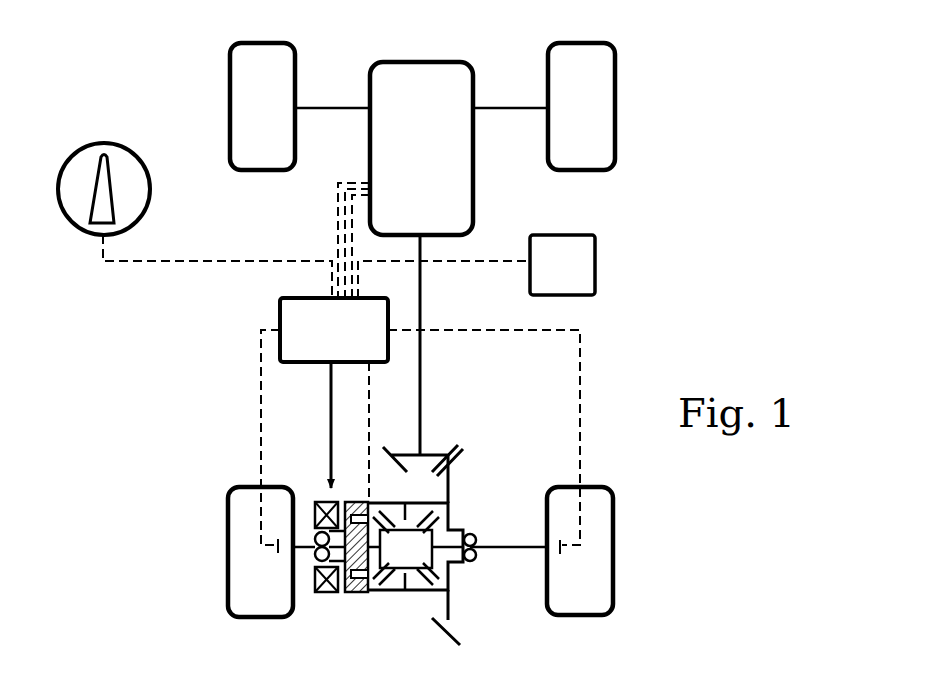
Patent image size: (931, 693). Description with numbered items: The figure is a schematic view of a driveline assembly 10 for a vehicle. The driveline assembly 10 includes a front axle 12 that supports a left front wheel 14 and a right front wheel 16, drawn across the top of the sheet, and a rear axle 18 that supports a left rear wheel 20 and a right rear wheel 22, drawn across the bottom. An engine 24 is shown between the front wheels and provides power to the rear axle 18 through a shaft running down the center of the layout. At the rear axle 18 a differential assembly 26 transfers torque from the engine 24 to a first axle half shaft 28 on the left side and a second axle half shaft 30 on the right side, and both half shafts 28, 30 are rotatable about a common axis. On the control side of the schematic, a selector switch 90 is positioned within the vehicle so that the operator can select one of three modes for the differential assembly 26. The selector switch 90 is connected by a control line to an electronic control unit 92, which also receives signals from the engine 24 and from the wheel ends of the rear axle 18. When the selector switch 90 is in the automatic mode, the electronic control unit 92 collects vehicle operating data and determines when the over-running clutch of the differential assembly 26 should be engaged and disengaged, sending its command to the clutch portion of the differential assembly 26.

The driveline assembly 10 is at (178, 418).
The front axle 12 is at (507, 108).
The left front wheel 14 is at (232, 46).
The right front wheel 16 is at (617, 70).
The rear axle 18 is at (504, 556).
The left rear wheel 20 is at (227, 603).
The right rear wheel 22 is at (613, 598).
The engine 24 is at (460, 188).
The differential assembly 26 is at (396, 598).
The first axle half shaft 28 is at (307, 550).
The second axle half shaft 30 is at (485, 540).
The selector switch 90 is at (97, 143).
The electronic control unit 92 is at (280, 298).